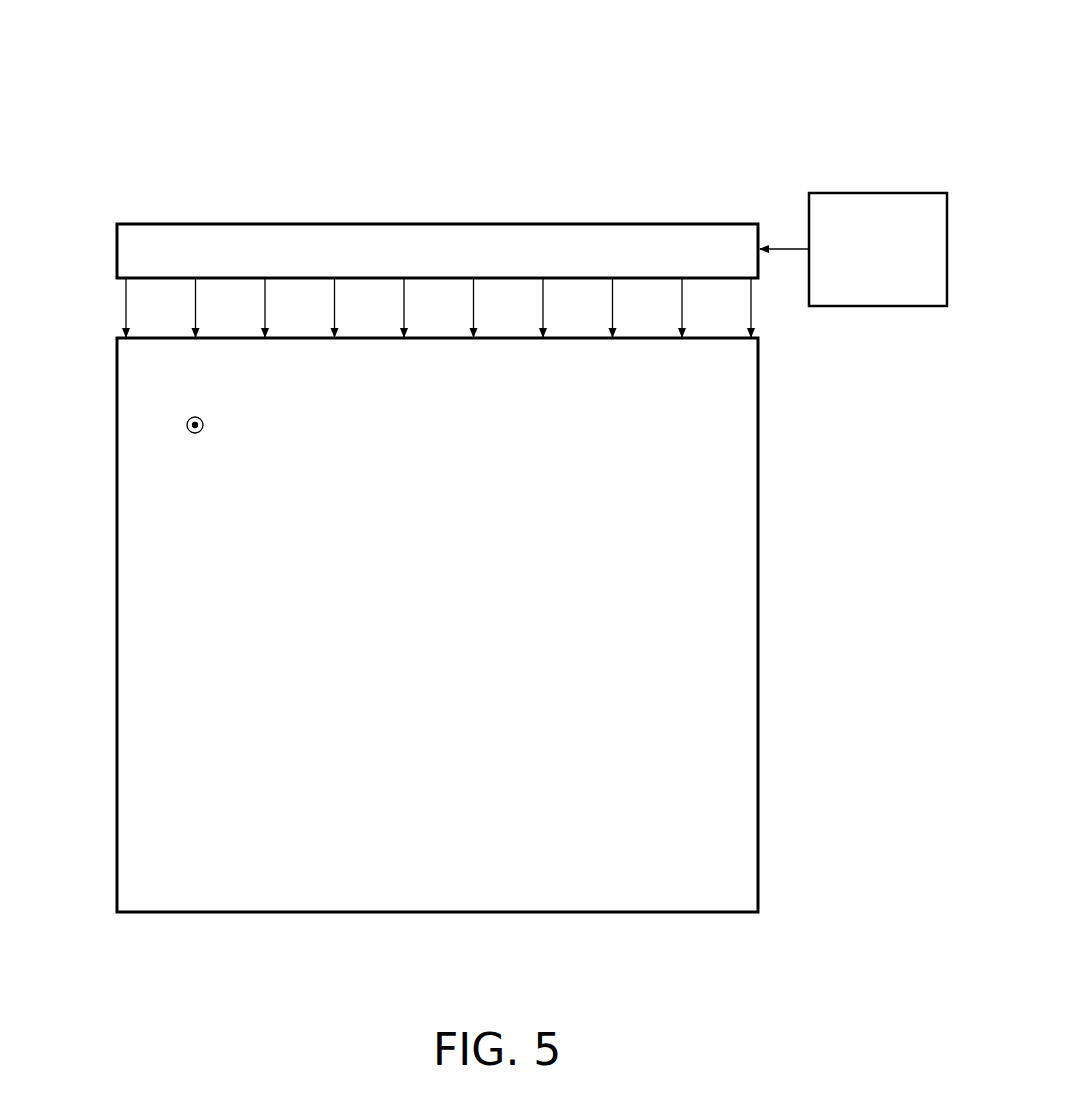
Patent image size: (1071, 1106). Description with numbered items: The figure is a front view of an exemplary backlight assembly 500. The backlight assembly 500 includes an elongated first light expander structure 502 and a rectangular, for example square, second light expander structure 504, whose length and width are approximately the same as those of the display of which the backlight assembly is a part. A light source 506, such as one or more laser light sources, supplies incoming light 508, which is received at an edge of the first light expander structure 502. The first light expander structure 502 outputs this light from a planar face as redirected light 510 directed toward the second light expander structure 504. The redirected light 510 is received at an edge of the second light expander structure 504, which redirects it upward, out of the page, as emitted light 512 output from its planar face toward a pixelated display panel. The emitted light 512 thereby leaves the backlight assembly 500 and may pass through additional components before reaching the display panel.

The backlight assembly 500 is at (200, 100).
The first light expander structure 502 is at (303, 220).
The second light expander structure 504 is at (451, 628).
The light source 506 is at (878, 193).
The incoming light 508 is at (790, 248).
The redirected light 510 is at (125, 305).
The emitted light 512 is at (187, 426).